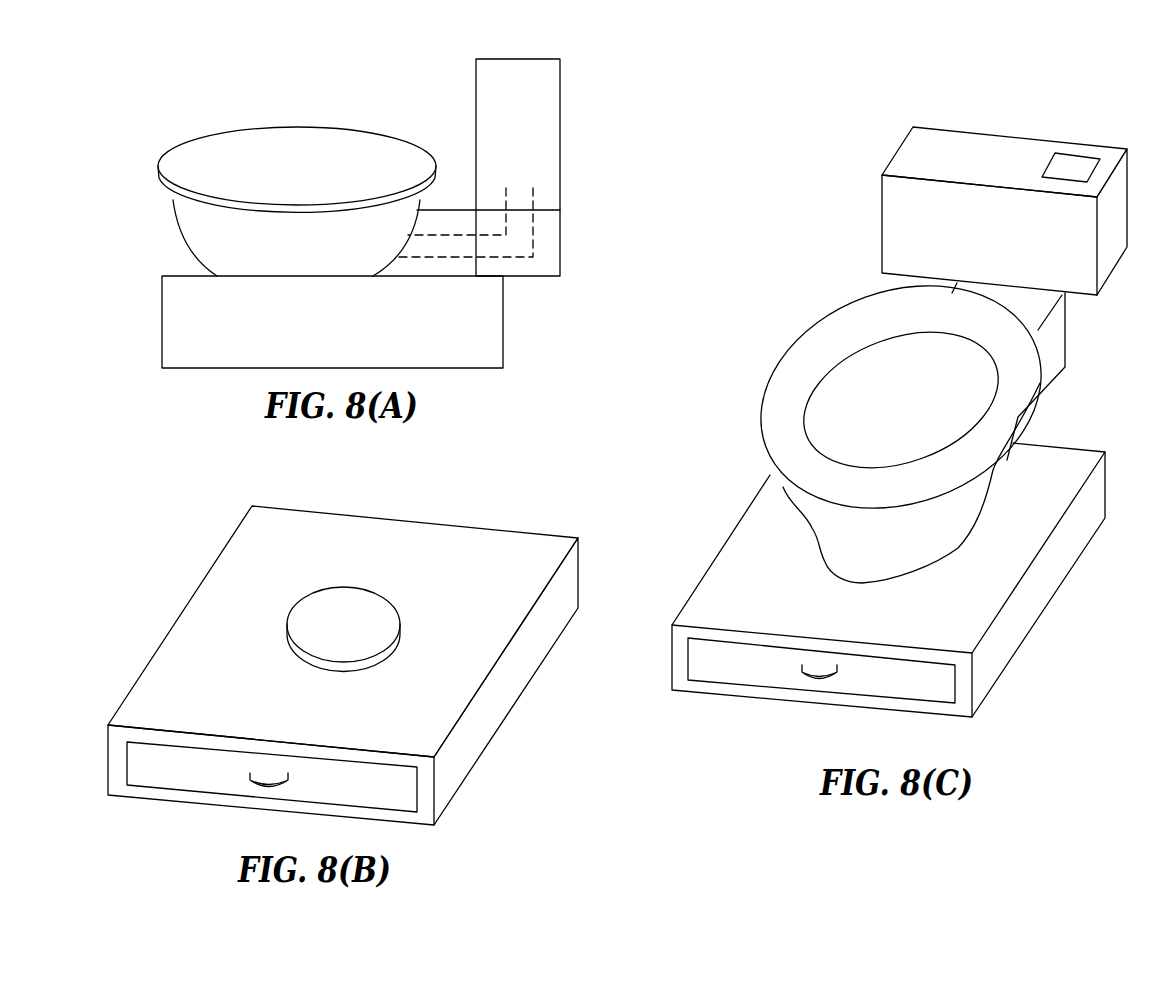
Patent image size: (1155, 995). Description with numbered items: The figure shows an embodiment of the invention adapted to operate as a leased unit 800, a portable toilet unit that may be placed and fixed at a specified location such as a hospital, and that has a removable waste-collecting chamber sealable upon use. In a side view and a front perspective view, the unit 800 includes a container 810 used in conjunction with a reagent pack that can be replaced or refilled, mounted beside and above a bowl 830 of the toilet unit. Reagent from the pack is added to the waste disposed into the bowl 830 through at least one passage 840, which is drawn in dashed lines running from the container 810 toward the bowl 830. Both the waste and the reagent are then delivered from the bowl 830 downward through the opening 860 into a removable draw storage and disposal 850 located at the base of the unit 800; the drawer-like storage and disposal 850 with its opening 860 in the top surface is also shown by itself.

In FIG. 8A, the leased unit 800 is at (157, 114).
In FIG. 8C, the leased unit 800 is at (813, 200).
In FIG. 8A, the container 810 is at (537, 99).
In FIG. 8C, the container 810 is at (955, 255).
In FIG. 8A, the bowl 830 is at (208, 238).
In FIG. 8C, the bowl 830 is at (883, 390).
In FIG. 8A, the passage 840 is at (518, 232).
In FIG. 8A, the removable draw storage and disposal 850 is at (245, 347).
In FIG. 8B, the removable draw storage and disposal 850 is at (343, 665).
In FIG. 8C, the removable draw storage and disposal 850 is at (955, 631).
In FIG. 8B, the opening 860 is at (352, 626).